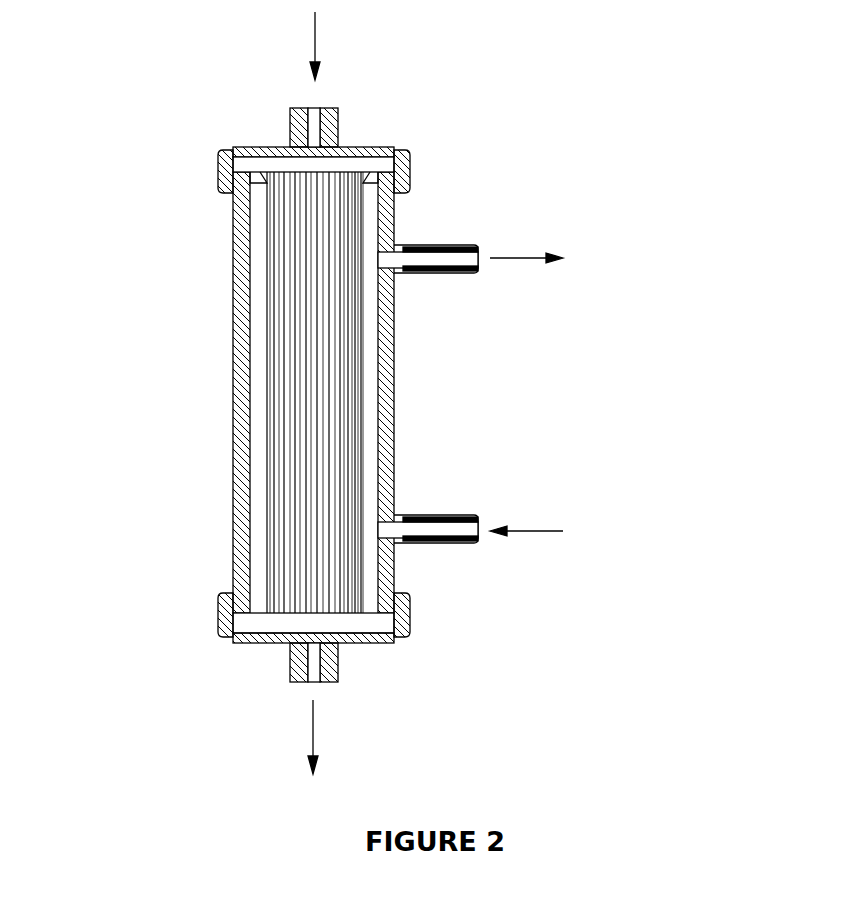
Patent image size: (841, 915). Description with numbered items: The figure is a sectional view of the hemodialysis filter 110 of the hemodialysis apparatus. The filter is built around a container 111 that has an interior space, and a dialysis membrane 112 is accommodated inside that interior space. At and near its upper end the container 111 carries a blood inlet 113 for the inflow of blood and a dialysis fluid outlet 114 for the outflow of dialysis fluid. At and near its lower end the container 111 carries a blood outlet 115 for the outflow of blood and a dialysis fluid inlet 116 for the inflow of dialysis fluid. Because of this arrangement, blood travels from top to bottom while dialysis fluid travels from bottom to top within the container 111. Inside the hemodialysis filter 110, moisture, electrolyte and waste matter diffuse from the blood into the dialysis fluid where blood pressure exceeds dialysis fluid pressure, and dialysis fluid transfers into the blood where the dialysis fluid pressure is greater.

The hemodialysis filter 110 is at (182, 233).
The container 111 is at (238, 338).
The dialysis membrane 112 is at (267, 460).
The blood inlet 113 is at (318, 108).
The dialysis fluid outlet 114 is at (412, 258).
The blood outlet 115 is at (315, 682).
The dialysis fluid inlet 116 is at (412, 530).